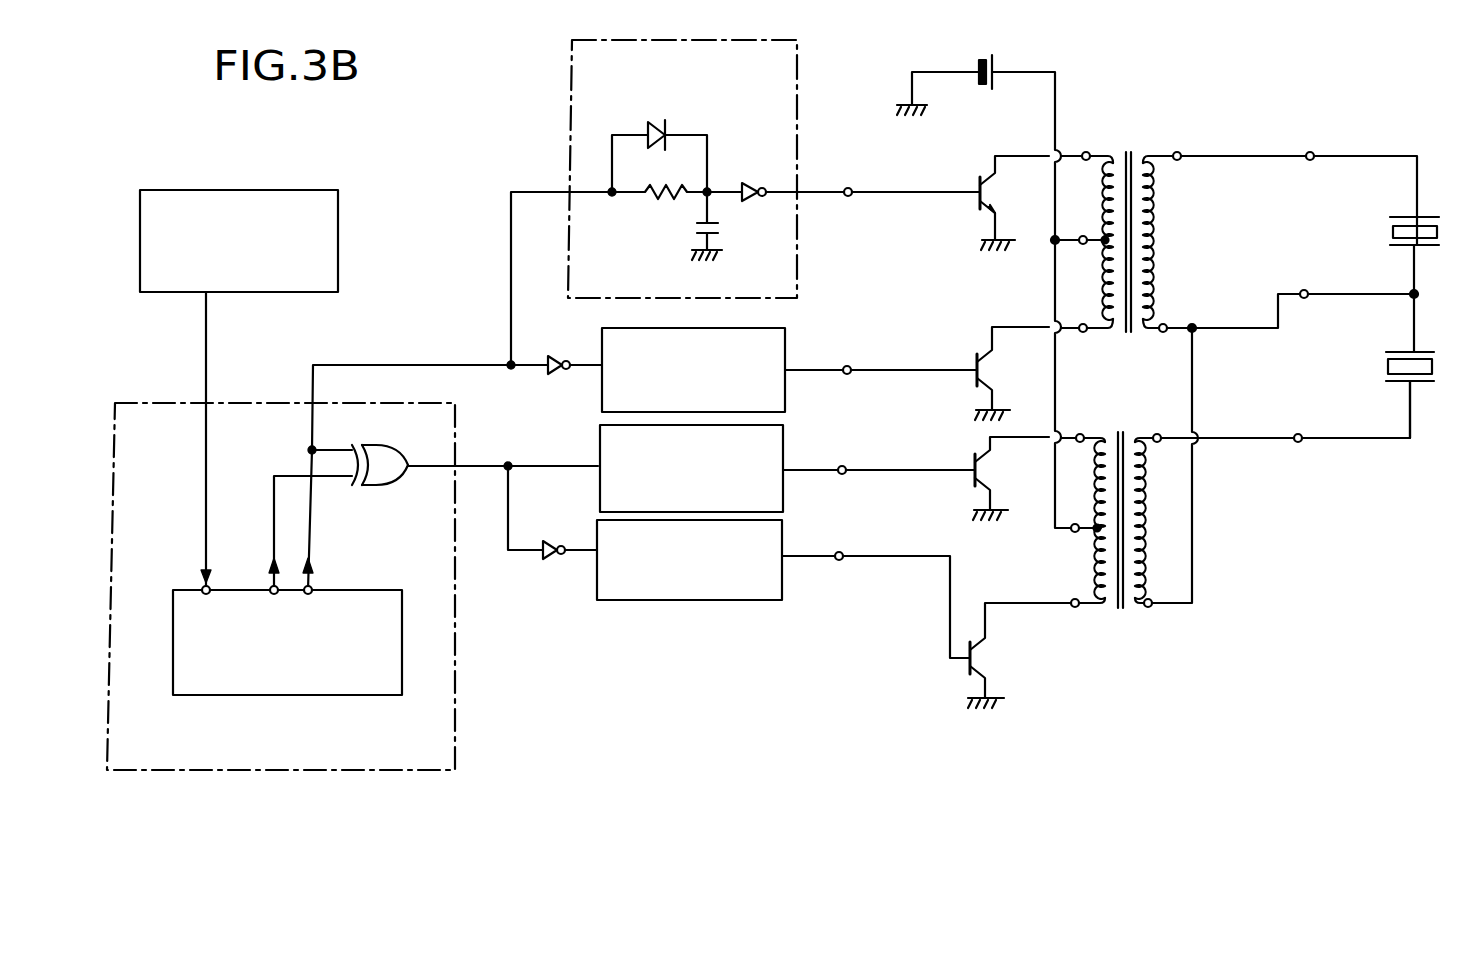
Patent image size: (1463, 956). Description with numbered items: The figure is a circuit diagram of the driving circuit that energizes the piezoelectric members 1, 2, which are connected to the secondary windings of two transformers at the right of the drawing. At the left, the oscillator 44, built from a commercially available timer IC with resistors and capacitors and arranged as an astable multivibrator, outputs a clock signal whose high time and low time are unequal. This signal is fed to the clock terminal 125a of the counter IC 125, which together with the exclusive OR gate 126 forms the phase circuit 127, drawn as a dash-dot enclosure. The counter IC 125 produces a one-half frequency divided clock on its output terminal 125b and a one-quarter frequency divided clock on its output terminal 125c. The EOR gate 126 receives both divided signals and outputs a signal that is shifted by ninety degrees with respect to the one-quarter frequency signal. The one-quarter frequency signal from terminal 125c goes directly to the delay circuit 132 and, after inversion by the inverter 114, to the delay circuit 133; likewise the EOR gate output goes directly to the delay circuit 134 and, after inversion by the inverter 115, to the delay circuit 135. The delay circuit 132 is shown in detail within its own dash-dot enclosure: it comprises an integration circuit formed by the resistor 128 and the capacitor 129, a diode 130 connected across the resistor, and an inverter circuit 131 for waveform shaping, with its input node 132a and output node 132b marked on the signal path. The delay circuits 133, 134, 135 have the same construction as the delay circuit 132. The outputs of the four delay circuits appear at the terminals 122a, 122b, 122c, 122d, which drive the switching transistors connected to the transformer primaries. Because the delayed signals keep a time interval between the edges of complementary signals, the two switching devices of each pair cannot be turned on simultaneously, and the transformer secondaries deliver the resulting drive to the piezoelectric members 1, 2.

The oscillator 44 is at (338, 202).
The counter IC 125 is at (380, 602).
The clock terminal 125a is at (203, 586).
The output terminal 125b is at (272, 586).
The output terminal 125c is at (310, 586).
The exclusive OR gate 126 is at (402, 458).
The phase circuit 127 is at (455, 720).
The inverter 114 is at (556, 376).
The inverter 115 is at (550, 561).
The delay circuit 132 is at (797, 106).
The delay circuit input node 132a is at (612, 196).
The delay circuit output node 132b is at (709, 188).
The resistor 128 is at (650, 198).
The capacitor 129 is at (720, 228).
The diode 130 is at (658, 140).
The inverter circuit 131 is at (762, 197).
The delay circuit 133 is at (806, 338).
The delay circuit 134 is at (784, 452).
The delay circuit 135 is at (783, 538).
The drive signal terminal 122a is at (848, 188).
The drive signal terminal 122b is at (850, 366).
The drive signal terminal 122c is at (845, 466).
The drive signal terminal 122d is at (842, 552).
The piezoelectric member 1 is at (1424, 215).
The piezoelectric member 2 is at (1432, 334).